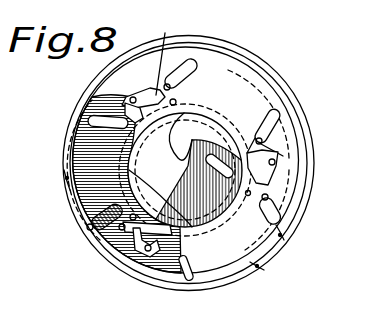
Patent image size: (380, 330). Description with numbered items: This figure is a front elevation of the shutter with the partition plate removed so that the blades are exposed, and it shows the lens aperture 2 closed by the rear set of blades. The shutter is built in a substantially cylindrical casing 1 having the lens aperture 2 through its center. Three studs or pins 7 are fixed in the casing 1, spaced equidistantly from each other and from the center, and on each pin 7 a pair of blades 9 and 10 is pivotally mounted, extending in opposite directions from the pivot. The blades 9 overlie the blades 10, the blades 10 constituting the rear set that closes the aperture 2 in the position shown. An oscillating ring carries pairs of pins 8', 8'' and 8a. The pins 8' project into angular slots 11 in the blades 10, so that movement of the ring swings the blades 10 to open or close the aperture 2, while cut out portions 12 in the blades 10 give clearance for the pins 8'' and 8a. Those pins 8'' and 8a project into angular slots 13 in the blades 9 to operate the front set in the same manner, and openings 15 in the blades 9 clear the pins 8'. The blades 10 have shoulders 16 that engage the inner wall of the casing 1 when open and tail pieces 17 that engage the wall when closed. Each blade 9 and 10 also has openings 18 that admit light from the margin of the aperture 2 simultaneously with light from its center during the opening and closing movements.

The casing 1 is at (278, 89).
The lens aperture 2 is at (230, 133).
The studs or pins 7 is at (177, 101).
The pins 8' is at (196, 160).
The pins or studs 8'' is at (117, 192).
The pins or studs 8a is at (300, 153).
The blades 9 is at (232, 97).
The blades 10 is at (281, 235).
The angular slots 11 is at (280, 218).
The cut out portions 12 is at (290, 140).
The angular slots 13 is at (100, 285).
The cut out portions or openings 15 is at (205, 56).
The shoulders 16 is at (258, 266).
The tail pieces 17 is at (67, 178).
The cut-away portions or openings 18 is at (97, 118).